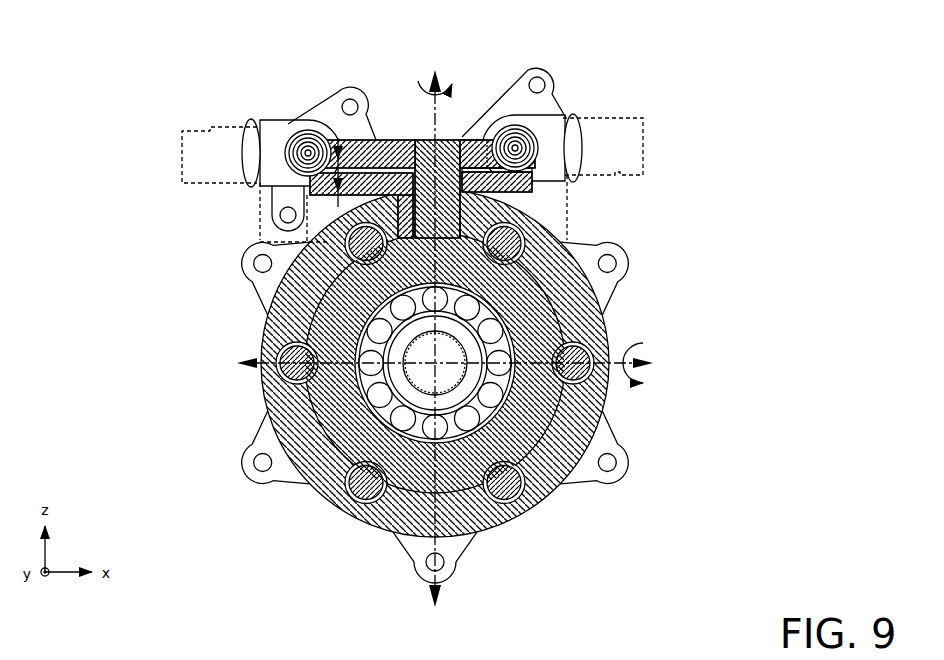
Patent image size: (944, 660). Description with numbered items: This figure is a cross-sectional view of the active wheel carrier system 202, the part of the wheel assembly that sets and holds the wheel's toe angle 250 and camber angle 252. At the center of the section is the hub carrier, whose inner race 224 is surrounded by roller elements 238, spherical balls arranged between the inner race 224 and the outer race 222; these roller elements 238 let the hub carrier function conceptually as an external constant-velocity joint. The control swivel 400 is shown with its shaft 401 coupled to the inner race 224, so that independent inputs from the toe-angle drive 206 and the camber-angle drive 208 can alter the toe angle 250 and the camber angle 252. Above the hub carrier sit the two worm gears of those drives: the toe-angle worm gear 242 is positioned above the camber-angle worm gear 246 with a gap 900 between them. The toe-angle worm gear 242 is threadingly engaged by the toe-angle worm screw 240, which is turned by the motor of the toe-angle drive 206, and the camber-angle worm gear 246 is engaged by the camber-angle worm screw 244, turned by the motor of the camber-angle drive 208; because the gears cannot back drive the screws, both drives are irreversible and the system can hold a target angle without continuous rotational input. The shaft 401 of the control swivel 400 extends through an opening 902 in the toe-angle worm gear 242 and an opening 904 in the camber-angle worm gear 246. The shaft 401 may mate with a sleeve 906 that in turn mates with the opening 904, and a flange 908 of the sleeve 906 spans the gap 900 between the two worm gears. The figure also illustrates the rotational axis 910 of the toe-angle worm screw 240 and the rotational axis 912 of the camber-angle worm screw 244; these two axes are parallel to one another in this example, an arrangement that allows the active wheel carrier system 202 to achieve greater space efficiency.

The active wheel carrier system 202 is at (792, 106).
The toe-angle drive 206 is at (168, 153).
The camber-angle drive 208 is at (684, 150).
The outer race 222 is at (250, 317).
The inner race 224 is at (541, 313).
The roller elements 238 is at (306, 242).
The toe-angle worm screw 240 is at (287, 135).
The toe-angle worm gear 242 is at (376, 137).
The camber-angle worm screw 244 is at (542, 150).
The camber-angle worm gear 246 is at (540, 186).
The toe angle 250 is at (418, 81).
The camber angle 252 is at (645, 342).
The control swivel 400 is at (458, 126).
The shaft 401 is at (418, 139).
The gap 900 is at (339, 203).
The opening 902 is at (466, 141).
The opening 904 is at (536, 172).
The sleeve 906 is at (462, 222).
The flange 908 is at (418, 235).
The rotational axis 910 is at (306, 149).
The rotational axis 912 is at (521, 144).